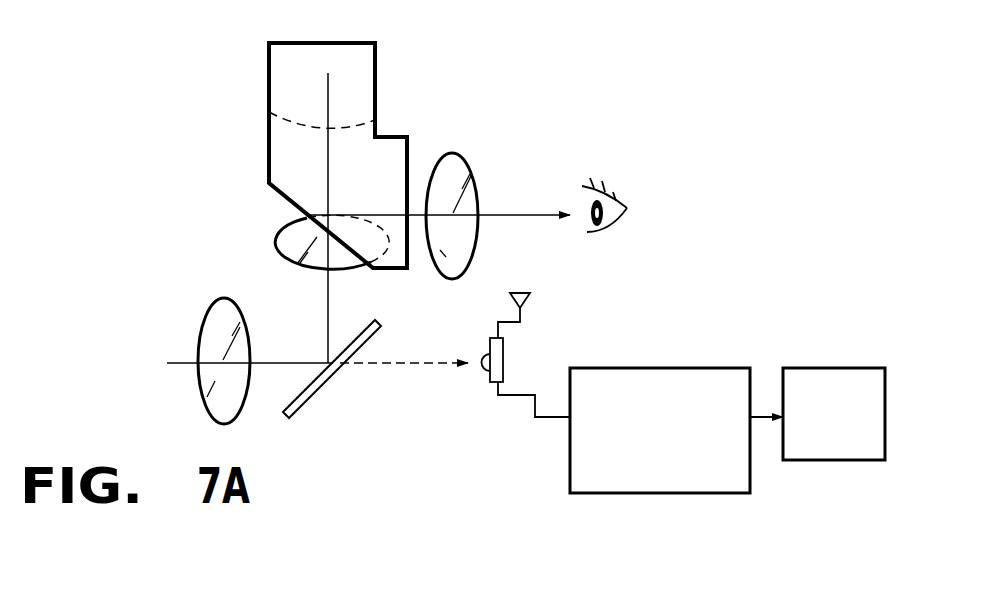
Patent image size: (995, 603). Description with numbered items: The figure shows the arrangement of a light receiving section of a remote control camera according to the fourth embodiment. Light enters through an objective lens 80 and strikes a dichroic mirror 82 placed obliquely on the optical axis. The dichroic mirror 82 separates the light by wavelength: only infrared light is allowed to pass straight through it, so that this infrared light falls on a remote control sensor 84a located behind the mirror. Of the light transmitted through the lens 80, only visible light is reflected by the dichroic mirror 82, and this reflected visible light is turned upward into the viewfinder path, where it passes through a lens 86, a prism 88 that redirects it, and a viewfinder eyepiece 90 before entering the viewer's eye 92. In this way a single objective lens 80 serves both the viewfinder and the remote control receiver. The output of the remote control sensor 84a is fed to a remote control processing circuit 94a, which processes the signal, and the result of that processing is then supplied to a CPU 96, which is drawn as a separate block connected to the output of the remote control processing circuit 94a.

The objective lens 80 is at (207, 403).
The dichroic mirror 82 is at (334, 378).
The remote control sensor 84a is at (482, 362).
The lens 86 is at (272, 238).
The prism 88 is at (376, 95).
The viewfinder eyepiece 90 is at (471, 178).
The viewer's eye 92 is at (628, 208).
The remote control processing circuit 94a is at (733, 477).
The CPU 96 is at (850, 462).